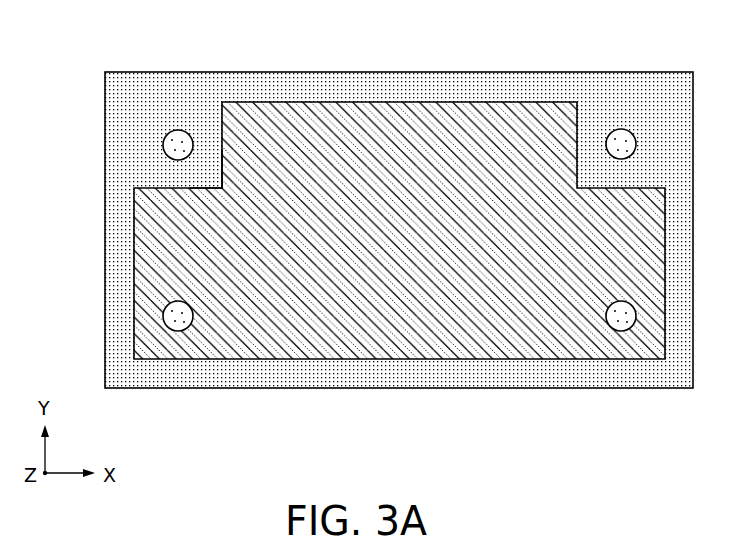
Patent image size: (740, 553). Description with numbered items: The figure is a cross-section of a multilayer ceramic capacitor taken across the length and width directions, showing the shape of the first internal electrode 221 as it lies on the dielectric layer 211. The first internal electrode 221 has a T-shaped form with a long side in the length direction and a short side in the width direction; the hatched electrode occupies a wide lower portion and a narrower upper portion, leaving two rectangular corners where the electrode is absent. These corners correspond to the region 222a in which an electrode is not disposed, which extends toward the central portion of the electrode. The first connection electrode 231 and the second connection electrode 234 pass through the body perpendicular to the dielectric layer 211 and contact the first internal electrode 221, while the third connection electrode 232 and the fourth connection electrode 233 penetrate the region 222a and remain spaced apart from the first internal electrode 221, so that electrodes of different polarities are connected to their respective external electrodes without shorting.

The dielectric layer 211 is at (400, 90).
The first internal electrode 221 is at (488, 107).
The region in which an electrode is not disposed 222a is at (209, 146).
The first connection electrode 231 is at (174, 320).
The third connection electrode 232 is at (173, 130).
The fourth connection electrode 233 is at (623, 130).
The second connection electrode 234 is at (625, 318).